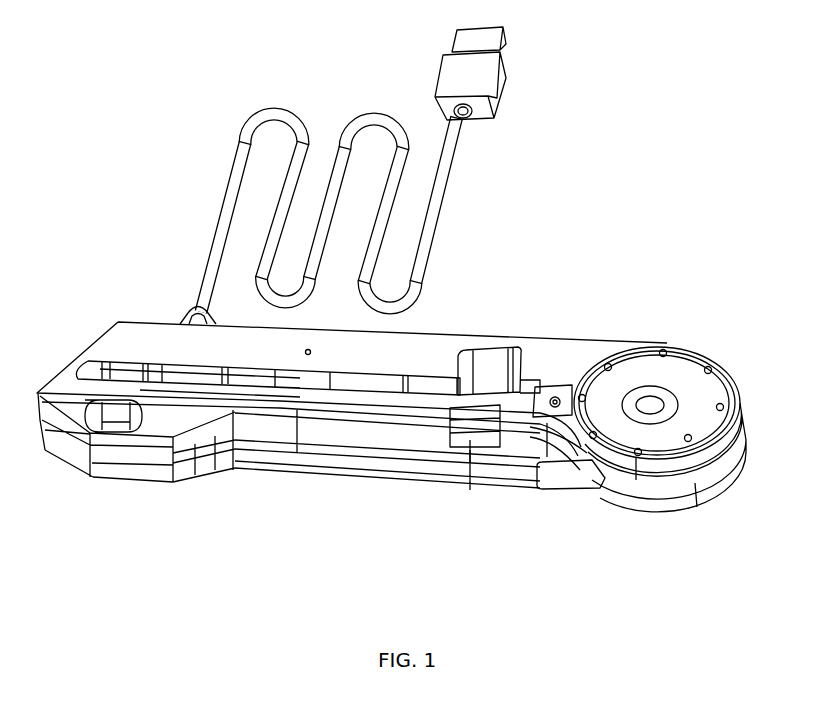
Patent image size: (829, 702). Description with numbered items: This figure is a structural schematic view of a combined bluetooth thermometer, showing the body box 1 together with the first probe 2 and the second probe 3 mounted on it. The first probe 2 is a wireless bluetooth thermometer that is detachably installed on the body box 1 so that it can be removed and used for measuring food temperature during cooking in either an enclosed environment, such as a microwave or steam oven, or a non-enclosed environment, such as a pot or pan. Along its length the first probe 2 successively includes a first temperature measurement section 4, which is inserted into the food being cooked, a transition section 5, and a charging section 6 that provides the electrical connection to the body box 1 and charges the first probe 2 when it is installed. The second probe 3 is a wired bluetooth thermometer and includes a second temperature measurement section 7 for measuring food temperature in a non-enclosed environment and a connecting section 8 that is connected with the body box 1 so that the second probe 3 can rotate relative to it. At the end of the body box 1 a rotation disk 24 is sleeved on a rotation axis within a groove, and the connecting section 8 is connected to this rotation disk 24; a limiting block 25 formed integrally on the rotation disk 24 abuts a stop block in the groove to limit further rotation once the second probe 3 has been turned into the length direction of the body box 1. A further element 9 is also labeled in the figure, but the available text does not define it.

The body box 1 is at (580, 360).
The first probe 2 is at (223, 373).
The second probe 3 is at (352, 460).
The first temperature measurement section 4 is at (120, 380).
The transition section 5 is at (363, 397).
The charging section 6 is at (508, 348).
The second temperature measurement section 7 is at (207, 457).
The connecting section 8 is at (565, 485).
The slot 9 is at (168, 372).
The rotation disk 24 is at (693, 483).
The limiting block 25 is at (723, 455).